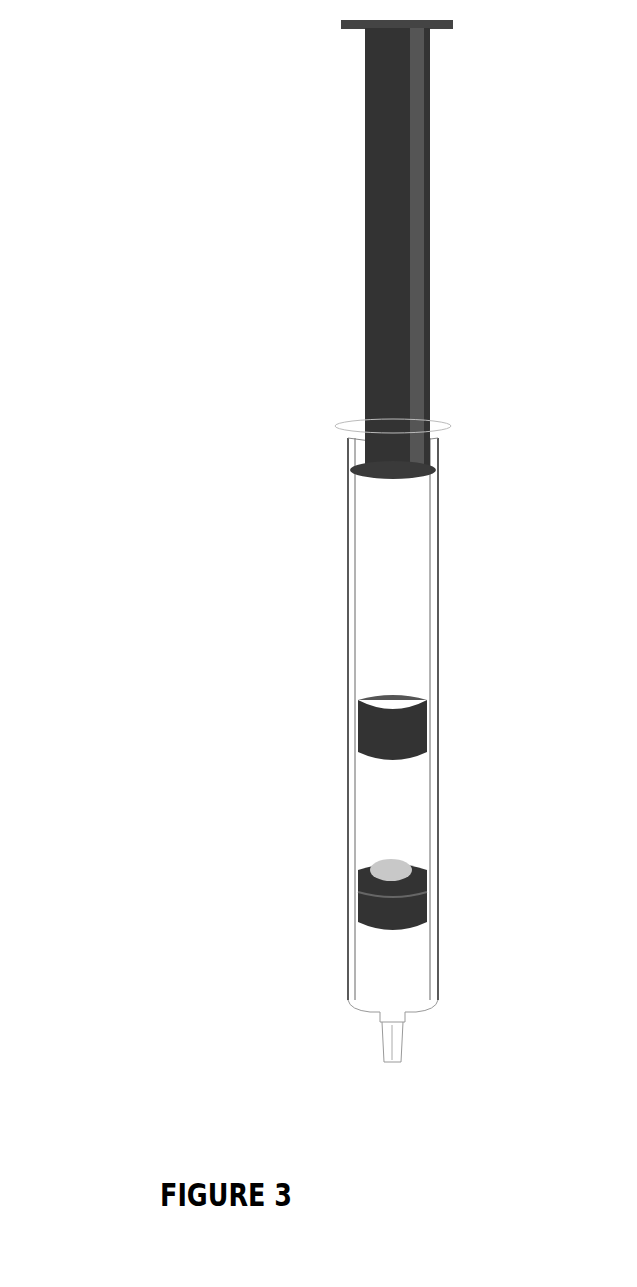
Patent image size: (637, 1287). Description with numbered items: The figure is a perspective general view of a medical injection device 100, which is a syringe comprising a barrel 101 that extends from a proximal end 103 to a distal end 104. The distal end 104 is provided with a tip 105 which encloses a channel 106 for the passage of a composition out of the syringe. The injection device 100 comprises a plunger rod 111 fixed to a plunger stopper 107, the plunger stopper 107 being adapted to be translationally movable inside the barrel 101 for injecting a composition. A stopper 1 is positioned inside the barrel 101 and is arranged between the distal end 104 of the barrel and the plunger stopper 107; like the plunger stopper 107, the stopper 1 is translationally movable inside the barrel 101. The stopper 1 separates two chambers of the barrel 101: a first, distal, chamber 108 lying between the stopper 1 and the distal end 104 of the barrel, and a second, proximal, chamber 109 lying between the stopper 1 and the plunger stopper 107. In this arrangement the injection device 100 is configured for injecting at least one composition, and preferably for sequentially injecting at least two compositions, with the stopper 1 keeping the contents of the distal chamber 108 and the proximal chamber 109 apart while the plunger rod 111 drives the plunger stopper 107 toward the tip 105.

The injection device 100 is at (268, 483).
The barrel 101 is at (430, 788).
The proximal end 103 is at (447, 428).
The distal end 104 is at (420, 1015).
The tip 105 is at (390, 1055).
The channel 106 is at (390, 1057).
The plunger stopper 107 is at (413, 732).
The first, distal, chamber 108 is at (375, 977).
The second, proximal, chamber 109 is at (375, 833).
The stopper 1 is at (375, 898).
The plunger rod 111 is at (420, 320).